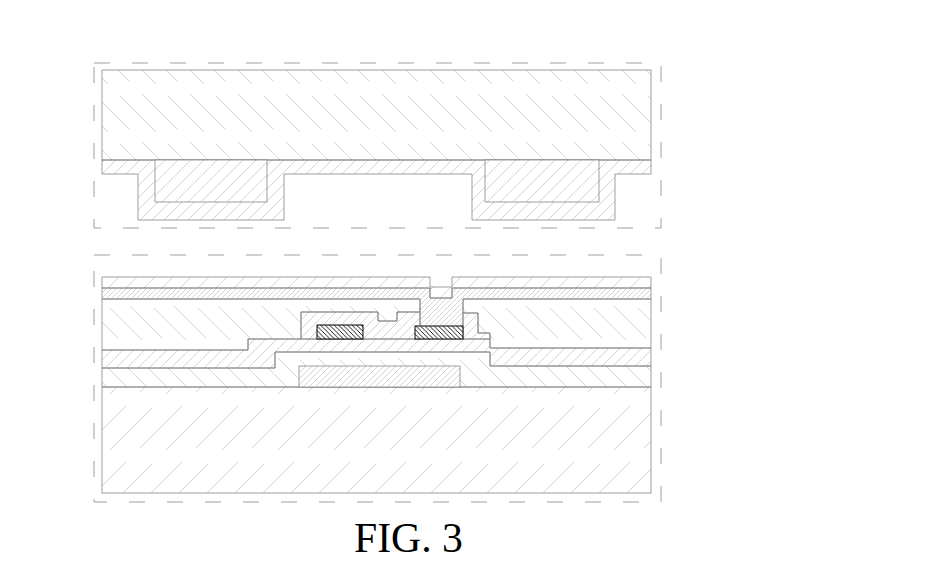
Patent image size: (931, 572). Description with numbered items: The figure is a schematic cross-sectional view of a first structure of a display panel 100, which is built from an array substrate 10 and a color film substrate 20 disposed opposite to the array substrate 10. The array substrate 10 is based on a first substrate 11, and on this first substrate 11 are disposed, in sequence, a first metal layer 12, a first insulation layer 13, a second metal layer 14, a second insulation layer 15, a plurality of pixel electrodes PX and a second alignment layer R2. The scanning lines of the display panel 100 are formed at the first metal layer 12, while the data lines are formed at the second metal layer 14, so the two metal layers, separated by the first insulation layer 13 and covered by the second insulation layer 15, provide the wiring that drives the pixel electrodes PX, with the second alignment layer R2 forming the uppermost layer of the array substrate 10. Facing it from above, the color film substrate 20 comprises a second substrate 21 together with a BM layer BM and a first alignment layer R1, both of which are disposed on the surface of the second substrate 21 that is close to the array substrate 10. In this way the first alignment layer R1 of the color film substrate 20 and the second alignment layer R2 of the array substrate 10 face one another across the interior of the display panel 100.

The display panel 100 is at (694, 60).
The array substrate 10 is at (662, 484).
The first substrate 11 is at (625, 433).
The first metal layer 12 is at (447, 374).
The first insulation layer 13 is at (112, 373).
The second metal layer 14 is at (448, 329).
The second insulation layer 15 is at (113, 327).
The pixel electrode PX is at (600, 294).
The second alignment layer R2 is at (113, 281).
The first alignment layer R1 is at (117, 168).
The color film substrate 20 is at (663, 103).
The second substrate 21 is at (110, 113).
The BM layer BM is at (575, 183).